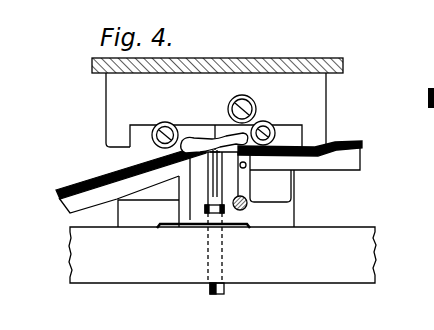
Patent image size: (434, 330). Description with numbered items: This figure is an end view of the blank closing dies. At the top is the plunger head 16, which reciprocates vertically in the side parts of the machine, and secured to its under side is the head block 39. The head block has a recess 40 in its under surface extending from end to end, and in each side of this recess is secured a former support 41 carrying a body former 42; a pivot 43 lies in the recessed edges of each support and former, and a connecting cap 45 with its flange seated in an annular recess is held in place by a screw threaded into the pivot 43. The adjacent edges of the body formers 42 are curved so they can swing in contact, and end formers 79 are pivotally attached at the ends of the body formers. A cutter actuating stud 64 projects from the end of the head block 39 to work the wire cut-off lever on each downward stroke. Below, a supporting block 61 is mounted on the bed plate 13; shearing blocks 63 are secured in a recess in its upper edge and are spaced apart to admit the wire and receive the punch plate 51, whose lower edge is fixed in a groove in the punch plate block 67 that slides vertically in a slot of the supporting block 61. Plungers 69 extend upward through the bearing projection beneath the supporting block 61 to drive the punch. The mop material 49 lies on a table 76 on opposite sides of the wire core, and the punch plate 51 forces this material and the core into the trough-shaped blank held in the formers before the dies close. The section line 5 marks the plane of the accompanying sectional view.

The section line 5- 5 is at (100, 145).
The bed plate 13 is at (337, 236).
The plunger head 16 is at (338, 66).
The head block 39 is at (318, 93).
The recess 40 is at (128, 139).
The former support 41 is at (138, 131).
The body former 42 is at (200, 142).
The pivot 43 is at (246, 208).
The connecting cap 45 is at (164, 123).
The mop material 49 is at (58, 201).
The punch plate 51 is at (218, 173).
The supporting block 61 is at (186, 220).
The shearing blocks 63 is at (198, 154).
The cutter actuating stud 64 is at (253, 92).
The punch plate block 67 is at (208, 200).
The plungers 69 is at (210, 288).
The table 76 is at (90, 204).
The end formers 79 is at (214, 128).